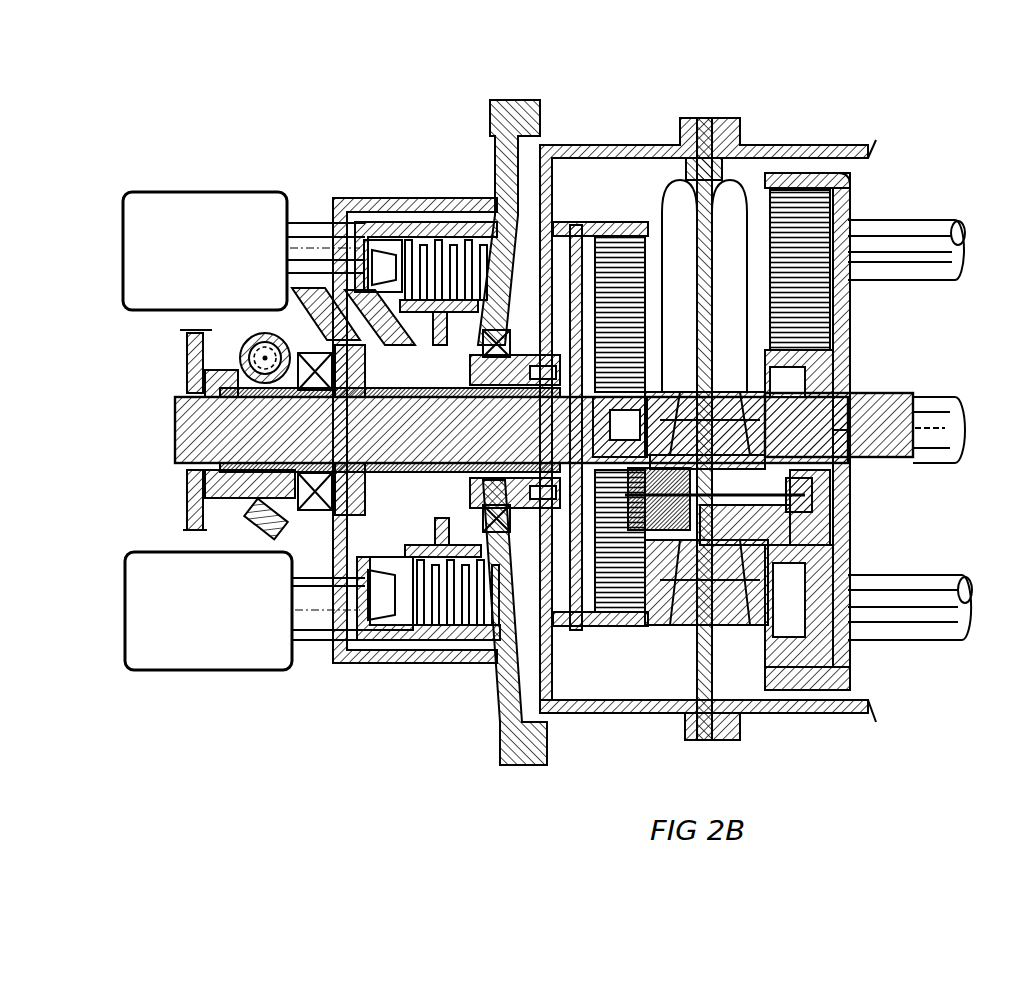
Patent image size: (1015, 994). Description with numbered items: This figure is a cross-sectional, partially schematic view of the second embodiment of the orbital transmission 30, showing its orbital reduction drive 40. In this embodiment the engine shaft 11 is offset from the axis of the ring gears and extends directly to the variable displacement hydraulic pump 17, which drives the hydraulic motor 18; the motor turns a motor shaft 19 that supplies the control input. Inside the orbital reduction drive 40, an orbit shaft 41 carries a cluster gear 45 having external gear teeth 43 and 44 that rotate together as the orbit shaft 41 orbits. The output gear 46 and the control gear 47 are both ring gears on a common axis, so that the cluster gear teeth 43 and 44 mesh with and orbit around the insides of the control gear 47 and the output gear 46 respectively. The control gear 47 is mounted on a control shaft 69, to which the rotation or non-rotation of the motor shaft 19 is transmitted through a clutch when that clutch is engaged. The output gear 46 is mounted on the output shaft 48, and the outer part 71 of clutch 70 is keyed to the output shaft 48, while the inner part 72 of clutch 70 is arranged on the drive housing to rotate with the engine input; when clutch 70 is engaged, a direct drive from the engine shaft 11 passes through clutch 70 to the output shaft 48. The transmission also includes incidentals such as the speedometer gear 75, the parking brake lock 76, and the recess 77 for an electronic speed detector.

The hydraulic pump 17 is at (143, 190).
The hydraulic motor 18 is at (160, 674).
The engine shaft 11 is at (303, 218).
The motor shaft 19 is at (293, 640).
The clutch 70 is at (368, 208).
The parking brake lock 76 is at (332, 226).
The outer part of clutch 71 is at (383, 235).
The inner part of clutch 72 is at (447, 312).
The speedometer gear 75 is at (250, 340).
The output shaft 48 is at (178, 428).
The recess for electronic speed detector 77 is at (282, 530).
The orbital reduction drive 40 is at (640, 128).
The orbital transmission 30 is at (800, 122).
The output gear 46 is at (594, 222).
The external gear teeth 44 is at (628, 640).
The orbit shaft 41 is at (818, 491).
The cluster gear 45 is at (823, 550).
The control gear 47 is at (852, 186).
The external gear teeth 43 is at (805, 700).
The control shaft 69 is at (900, 395).